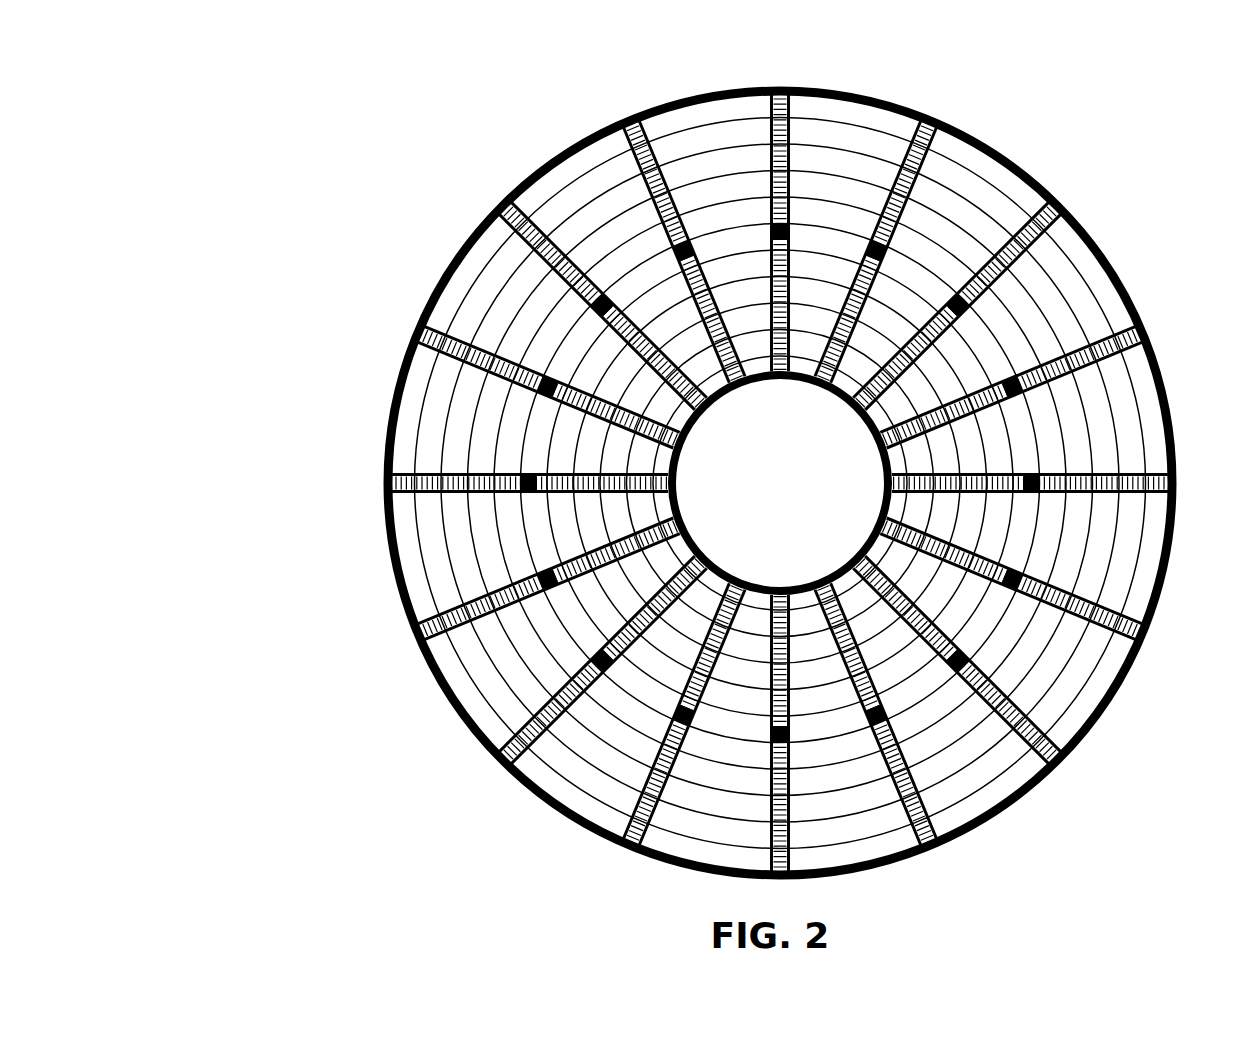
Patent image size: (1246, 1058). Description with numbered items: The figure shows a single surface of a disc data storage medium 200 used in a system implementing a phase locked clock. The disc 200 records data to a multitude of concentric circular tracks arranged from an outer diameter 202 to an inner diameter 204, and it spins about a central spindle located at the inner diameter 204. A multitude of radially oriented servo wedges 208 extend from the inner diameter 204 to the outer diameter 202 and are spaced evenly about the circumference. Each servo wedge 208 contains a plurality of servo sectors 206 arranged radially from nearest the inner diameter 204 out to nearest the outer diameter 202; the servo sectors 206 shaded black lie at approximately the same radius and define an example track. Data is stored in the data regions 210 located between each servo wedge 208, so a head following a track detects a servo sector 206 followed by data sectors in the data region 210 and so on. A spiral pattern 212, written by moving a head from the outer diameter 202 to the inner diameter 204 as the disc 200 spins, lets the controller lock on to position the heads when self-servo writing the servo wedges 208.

The data storage medium 200 is at (698, 452).
The outer diameter 202 is at (472, 204).
The inner diameter 204 is at (780, 389).
The servo sectors 206 is at (519, 510).
The servo wedges 208 is at (1148, 455).
The data regions 210 is at (1152, 515).
The spiral pattern 212 is at (707, 120).